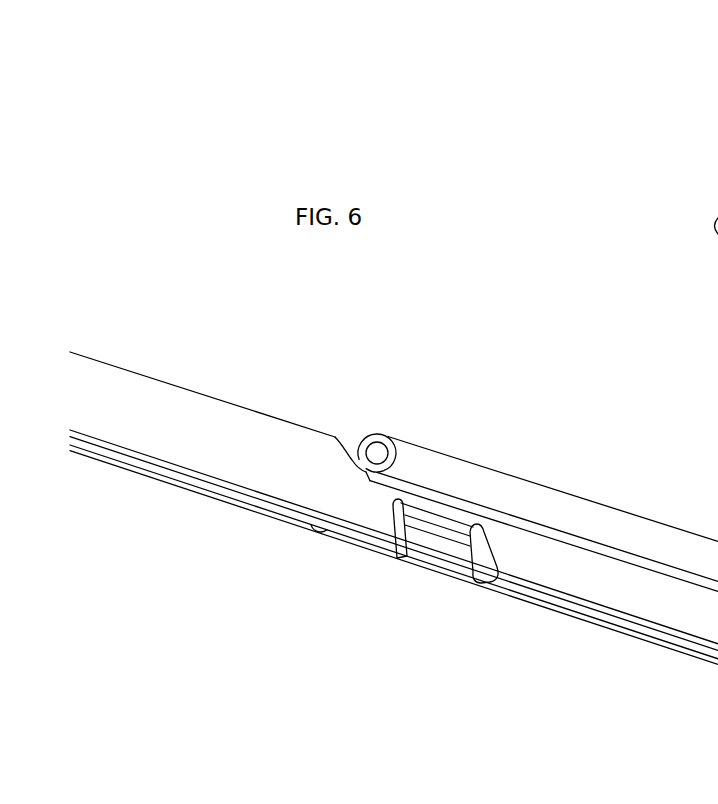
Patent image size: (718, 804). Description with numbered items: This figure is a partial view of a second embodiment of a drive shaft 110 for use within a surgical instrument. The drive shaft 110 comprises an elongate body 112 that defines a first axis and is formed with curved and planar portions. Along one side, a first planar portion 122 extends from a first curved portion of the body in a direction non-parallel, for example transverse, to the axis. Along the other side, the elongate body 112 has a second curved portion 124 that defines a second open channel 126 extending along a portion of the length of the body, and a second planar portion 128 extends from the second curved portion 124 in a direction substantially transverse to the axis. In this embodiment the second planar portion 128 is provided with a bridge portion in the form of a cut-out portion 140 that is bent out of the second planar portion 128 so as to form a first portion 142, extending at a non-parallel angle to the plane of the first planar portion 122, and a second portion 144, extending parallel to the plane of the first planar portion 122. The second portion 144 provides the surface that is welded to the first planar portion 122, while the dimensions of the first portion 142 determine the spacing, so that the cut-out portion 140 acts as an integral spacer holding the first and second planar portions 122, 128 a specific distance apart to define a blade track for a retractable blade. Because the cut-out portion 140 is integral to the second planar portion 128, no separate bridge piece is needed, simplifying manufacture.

The drive shaft 110 is at (388, 517).
The elongate body 112 is at (212, 370).
The first planar portion 122 is at (162, 481).
The second curved portion 124 is at (483, 481).
The second open channel 126 is at (375, 452).
The second planar portion 128 is at (192, 428).
The cut-out portion 140 is at (435, 597).
The first portion 142 is at (401, 530).
The second portion 144 is at (452, 602).